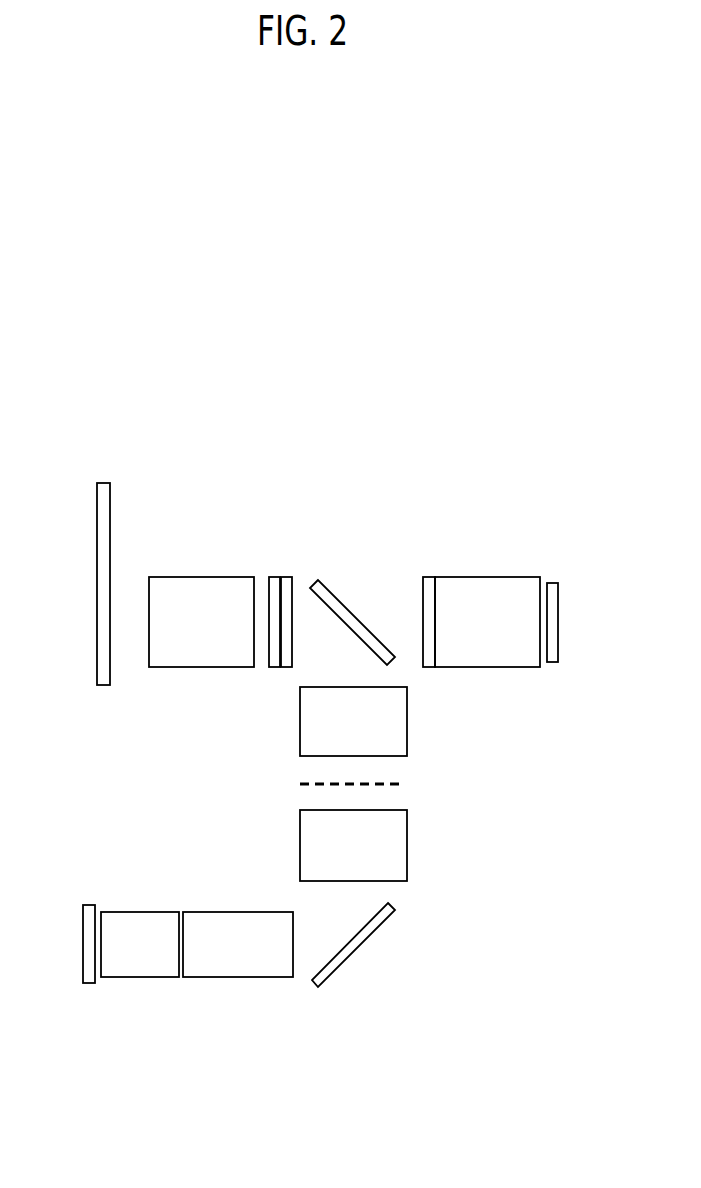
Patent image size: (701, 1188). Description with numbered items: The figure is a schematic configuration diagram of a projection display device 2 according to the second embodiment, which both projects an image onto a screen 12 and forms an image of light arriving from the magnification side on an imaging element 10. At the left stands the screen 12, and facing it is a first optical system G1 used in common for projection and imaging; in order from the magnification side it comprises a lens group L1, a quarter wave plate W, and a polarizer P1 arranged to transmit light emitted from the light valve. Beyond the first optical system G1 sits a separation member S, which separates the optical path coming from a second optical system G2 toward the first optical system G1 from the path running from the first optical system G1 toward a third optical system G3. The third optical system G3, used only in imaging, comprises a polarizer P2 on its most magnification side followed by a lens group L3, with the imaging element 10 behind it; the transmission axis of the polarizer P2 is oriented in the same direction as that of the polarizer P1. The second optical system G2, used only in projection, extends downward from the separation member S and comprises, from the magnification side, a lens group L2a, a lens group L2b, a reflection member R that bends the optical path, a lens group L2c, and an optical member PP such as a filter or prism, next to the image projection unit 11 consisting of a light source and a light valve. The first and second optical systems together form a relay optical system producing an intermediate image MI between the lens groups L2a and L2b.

The projection display device 2 is at (378, 448).
The screen 12 is at (97, 625).
The first optical system G1 is at (315, 500).
The lens group L1 is at (182, 577).
The quarter wave plate W is at (274, 577).
The polarizer P1 is at (285, 577).
The separation member S is at (350, 608).
The third optical system G3 is at (508, 500).
The polarizer P2 is at (432, 577).
The lens group L3 is at (488, 577).
The imaging element 10 is at (558, 642).
The second optical system G2 is at (513, 760).
The lens group L2a is at (407, 733).
The intermediate image MI is at (300, 784).
The lens group L2b is at (407, 843).
The reflection member R is at (370, 938).
The optical member PP is at (155, 977).
The lens group L2c is at (262, 977).
The image projection unit 11 is at (83, 960).